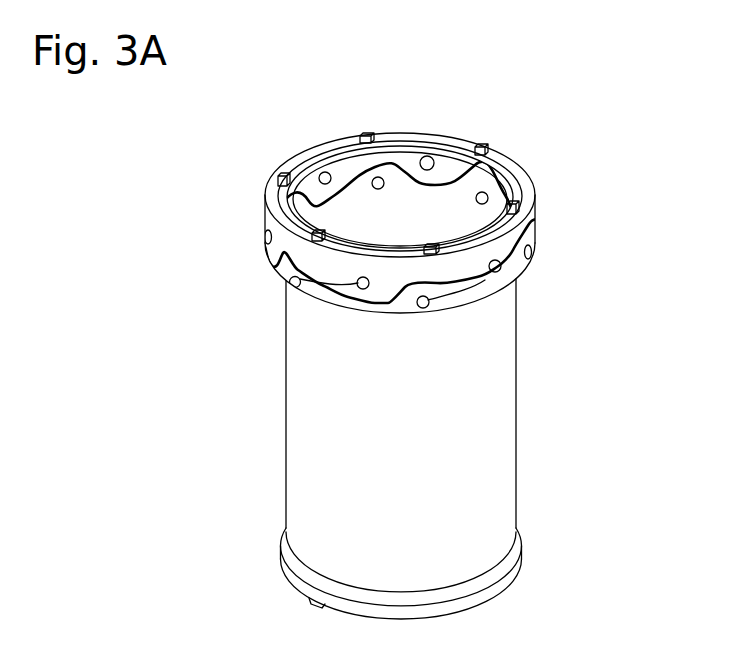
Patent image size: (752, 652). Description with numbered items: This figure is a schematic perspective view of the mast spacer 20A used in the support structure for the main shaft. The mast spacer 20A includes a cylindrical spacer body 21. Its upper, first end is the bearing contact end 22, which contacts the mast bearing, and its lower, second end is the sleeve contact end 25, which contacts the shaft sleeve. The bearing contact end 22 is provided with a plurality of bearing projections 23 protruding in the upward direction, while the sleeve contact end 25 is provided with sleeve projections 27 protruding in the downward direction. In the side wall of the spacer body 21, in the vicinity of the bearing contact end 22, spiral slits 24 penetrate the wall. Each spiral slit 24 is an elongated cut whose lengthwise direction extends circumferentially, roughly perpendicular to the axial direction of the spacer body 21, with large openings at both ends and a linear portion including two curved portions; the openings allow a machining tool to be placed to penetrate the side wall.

The mast spacer 20A is at (552, 192).
The cylindrical spacer body 21 is at (508, 383).
The bearing contact end 22 is at (266, 203).
The bearing projections 23 is at (366, 137).
The spiral slits 24 is at (521, 270).
The sleeve contact end 25 is at (287, 548).
The sleeve projections 27 is at (311, 602).